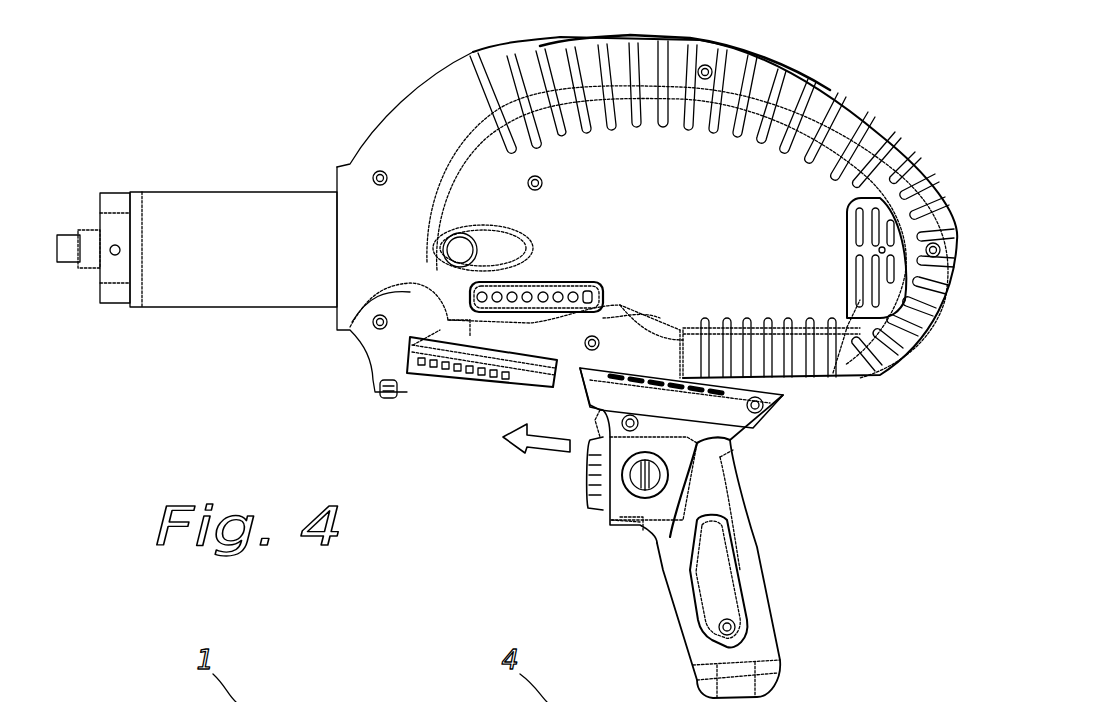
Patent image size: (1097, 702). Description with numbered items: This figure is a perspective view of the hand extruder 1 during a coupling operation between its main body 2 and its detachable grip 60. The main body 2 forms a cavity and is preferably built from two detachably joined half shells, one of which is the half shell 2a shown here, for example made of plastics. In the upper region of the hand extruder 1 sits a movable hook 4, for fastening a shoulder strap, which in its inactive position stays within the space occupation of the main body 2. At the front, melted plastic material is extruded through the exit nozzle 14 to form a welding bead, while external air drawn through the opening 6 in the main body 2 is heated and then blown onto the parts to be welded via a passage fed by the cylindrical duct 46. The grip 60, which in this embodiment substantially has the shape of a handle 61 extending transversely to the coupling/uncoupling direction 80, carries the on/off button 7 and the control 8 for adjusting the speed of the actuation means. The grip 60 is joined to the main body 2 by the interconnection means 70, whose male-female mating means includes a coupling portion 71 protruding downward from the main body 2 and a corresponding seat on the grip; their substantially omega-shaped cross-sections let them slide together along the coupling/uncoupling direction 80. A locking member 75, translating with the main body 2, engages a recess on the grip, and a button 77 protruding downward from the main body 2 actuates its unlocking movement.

The hand extruder 1 is at (266, 106).
The main body 2 is at (864, 82).
The half shell 2a is at (747, 167).
The movable hook 4 is at (577, 41).
The opening 6 is at (877, 290).
The cylindrical duct 46 is at (188, 233).
The exit nozzle 14 is at (67, 258).
The interconnection means 70 is at (562, 402).
The on/off button 7 is at (584, 448).
The control 8 is at (586, 500).
The coupling/uncoupling direction 80 is at (503, 444).
The grip 60 is at (775, 546).
The handle 61 is at (763, 613).
The locking member 75 is at (413, 386).
The coupling portion 71 is at (457, 384).
The button 77 is at (385, 380).